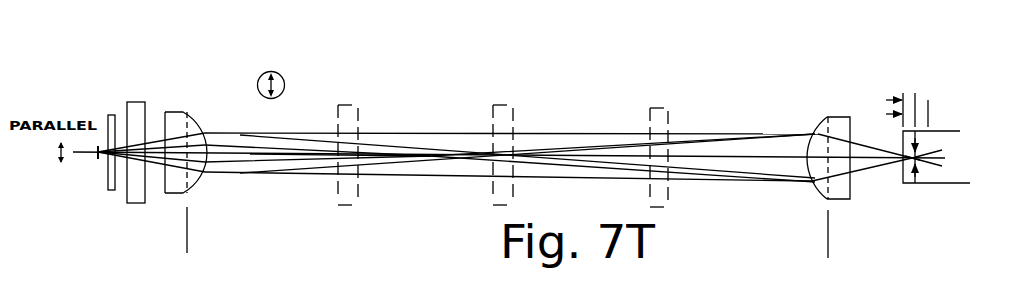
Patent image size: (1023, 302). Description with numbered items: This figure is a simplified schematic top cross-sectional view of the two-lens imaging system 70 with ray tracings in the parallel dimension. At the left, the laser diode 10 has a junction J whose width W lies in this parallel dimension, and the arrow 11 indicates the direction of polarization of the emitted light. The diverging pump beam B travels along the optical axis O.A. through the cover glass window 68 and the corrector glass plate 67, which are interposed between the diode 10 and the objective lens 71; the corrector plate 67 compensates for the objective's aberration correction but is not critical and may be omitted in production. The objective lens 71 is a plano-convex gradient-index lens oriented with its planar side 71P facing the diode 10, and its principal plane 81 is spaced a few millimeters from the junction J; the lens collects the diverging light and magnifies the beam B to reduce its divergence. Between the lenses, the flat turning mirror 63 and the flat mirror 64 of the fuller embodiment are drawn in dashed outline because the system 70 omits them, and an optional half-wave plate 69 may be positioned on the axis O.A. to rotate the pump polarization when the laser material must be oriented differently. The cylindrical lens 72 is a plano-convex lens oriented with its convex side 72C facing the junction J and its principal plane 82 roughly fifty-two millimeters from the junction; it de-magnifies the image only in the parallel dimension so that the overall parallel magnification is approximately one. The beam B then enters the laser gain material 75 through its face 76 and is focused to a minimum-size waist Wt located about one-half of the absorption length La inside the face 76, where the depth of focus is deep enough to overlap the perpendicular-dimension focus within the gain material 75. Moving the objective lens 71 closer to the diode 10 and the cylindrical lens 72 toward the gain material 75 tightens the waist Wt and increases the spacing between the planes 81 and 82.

The two-lens imaging system 70 is at (225, 43).
The laser diode 10 is at (92, 165).
The diode junction J is at (98, 147).
The junction width W is at (51, 152).
The cover glass window 68 is at (110, 114).
The corrector glass plate 67 is at (135, 102).
The objective lens 71 is at (183, 112).
The planar side of objective lens 71P is at (165, 182).
The principal plane of objective lens 81 is at (187, 226).
The arrow indicating light polarization direction 11 is at (281, 75).
The optical axis O.A. is at (333, 152).
The pump beam B is at (287, 203).
The flat turning mirror 63 is at (356, 105).
The half-wave plate 69 is at (510, 105).
The flat mirror 64 is at (666, 108).
The cylindrical lens 72 is at (838, 117).
The convex side of cylindrical lens 72C is at (821, 122).
The principal plane of cylindrical lens 82 is at (828, 244).
The entrance face of laser gain material 76 is at (903, 165).
The laser gain material 75 is at (948, 129).
The beam waist Wt is at (916, 178).
The absorption length La is at (929, 114).